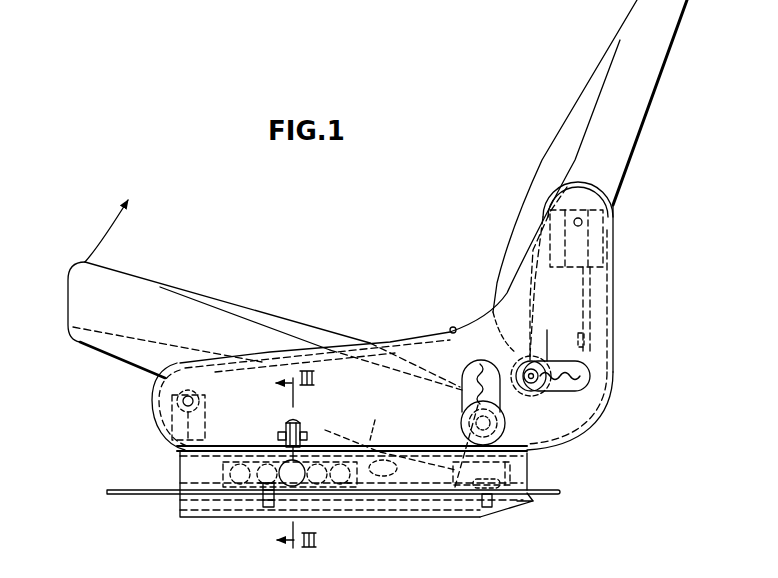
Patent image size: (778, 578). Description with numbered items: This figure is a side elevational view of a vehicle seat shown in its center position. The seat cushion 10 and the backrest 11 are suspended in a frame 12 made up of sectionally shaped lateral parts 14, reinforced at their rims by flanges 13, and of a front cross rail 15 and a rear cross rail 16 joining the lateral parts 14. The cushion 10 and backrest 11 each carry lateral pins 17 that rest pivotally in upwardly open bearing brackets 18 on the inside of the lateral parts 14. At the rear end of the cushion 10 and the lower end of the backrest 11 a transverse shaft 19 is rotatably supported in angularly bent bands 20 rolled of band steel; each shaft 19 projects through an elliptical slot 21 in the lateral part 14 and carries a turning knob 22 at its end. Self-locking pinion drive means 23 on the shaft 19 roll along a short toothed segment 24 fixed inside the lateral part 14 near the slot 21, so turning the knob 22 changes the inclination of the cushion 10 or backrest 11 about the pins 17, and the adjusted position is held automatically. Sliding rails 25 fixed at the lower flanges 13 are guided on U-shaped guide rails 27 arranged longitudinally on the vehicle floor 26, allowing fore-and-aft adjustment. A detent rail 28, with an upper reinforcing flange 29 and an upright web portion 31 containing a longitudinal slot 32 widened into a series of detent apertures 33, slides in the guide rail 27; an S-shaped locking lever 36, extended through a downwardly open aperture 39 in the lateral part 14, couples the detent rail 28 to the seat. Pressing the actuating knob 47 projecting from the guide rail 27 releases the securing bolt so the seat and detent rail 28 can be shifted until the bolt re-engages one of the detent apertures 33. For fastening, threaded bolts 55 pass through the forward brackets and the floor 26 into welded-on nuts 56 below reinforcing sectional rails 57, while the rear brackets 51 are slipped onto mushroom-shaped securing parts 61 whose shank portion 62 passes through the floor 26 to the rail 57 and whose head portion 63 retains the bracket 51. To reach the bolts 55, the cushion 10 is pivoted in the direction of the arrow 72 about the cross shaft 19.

The seat cushion 10 is at (136, 290).
The backrest 11 is at (652, 42).
The frame 12 is at (582, 441).
The flanges 13 is at (450, 327).
The lateral parts 14 is at (598, 292).
The cross rail 15 is at (152, 404).
The cross rail 16 is at (612, 243).
The lateral pins 17 is at (578, 217).
The bearing brackets 18 is at (568, 278).
The transverse shaft 19 is at (465, 426).
The bands 20 is at (608, 332).
The slots 21 is at (486, 388).
The turning knobs 22 is at (512, 357).
The pinion drive means 23 is at (538, 352).
The toothed segments 24 is at (466, 370).
The sliding rails 25 is at (310, 472).
The vehicle floor 26 is at (148, 495).
The guide rails 27 is at (188, 470).
The detent rail 28 is at (352, 484).
The upper flange 29 is at (378, 450).
The web portion 31 is at (380, 481).
The longitudinal slot 32 is at (326, 430).
The detent apertures 33 is at (376, 419).
The locking lever 36 is at (285, 430).
The aperture 39 is at (295, 420).
The actuating knob 47 is at (296, 486).
The rear brackets 51 is at (517, 482).
The threaded bolts 55 is at (272, 508).
The welded-on nuts 56 is at (252, 504).
The sectional rails 57 is at (203, 512).
The mushroom-shaped securing parts 61 is at (476, 502).
The shank portion 62 is at (486, 508).
The head portion 63 is at (498, 501).
The arrow 72 is at (97, 241).